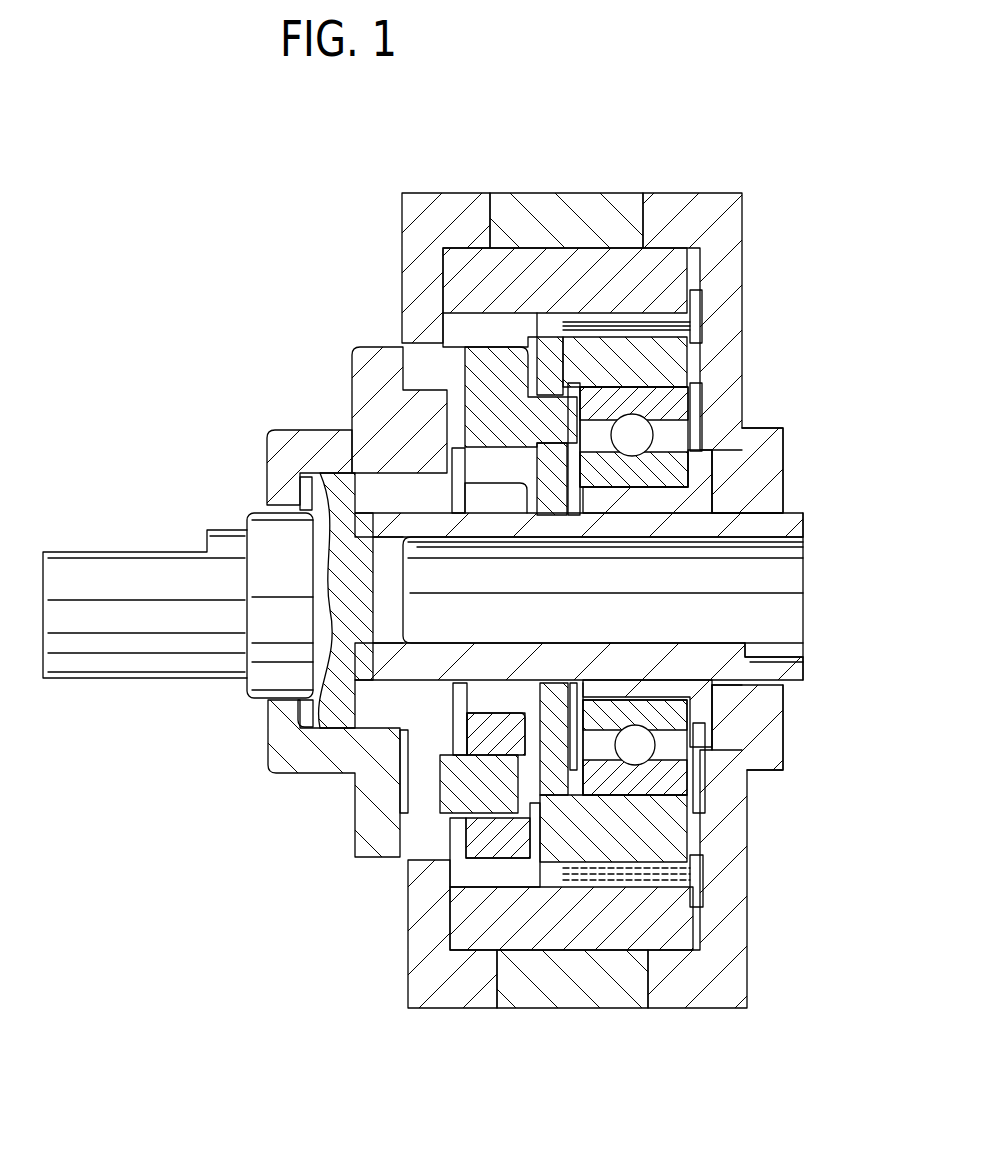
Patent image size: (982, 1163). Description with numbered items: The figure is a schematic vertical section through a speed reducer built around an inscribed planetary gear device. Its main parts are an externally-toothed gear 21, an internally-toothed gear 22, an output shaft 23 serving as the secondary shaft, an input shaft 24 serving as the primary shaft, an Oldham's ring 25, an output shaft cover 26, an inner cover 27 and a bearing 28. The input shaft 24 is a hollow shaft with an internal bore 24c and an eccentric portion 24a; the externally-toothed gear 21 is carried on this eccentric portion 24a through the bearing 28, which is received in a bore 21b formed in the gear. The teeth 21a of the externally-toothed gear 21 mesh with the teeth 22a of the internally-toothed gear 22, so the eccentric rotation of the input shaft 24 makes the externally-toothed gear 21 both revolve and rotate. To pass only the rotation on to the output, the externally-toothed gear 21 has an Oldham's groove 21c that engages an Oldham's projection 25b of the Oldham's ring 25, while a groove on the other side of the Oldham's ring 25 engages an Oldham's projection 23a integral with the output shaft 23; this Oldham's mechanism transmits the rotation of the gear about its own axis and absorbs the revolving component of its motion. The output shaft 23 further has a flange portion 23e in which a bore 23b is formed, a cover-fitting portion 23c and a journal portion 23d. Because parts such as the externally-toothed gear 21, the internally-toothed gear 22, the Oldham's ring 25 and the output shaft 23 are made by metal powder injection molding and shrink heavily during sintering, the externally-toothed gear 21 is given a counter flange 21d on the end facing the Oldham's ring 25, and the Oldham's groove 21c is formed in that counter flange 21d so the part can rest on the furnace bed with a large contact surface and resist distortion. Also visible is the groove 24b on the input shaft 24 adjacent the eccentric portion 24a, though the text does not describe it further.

The externally-toothed gear 21 is at (673, 367).
The teeth 21a is at (702, 322).
The bore 21b is at (687, 398).
The Oldham's groove 21c is at (527, 332).
The counter flange 21d is at (330, 440).
The internally-toothed gear 22 is at (663, 290).
The teeth 22a is at (693, 310).
The output shaft 23 is at (252, 698).
The Oldham's projection 23a is at (493, 797).
The bore 23b is at (383, 478).
The cover-fitting portion 23c is at (263, 512).
The journal portion 23d is at (148, 665).
The flange portion 23e is at (420, 792).
The input shaft 24 is at (720, 665).
The eccentric portion 24a is at (673, 502).
The output shaft 24b is at (783, 525).
The internal bore 24c is at (722, 638).
The Oldham's ring 25 is at (483, 400).
The Oldham's projection 25b is at (560, 408).
The output shaft cover 26 is at (328, 440).
The inner cover 27 is at (763, 452).
The bearing 28 is at (682, 780).